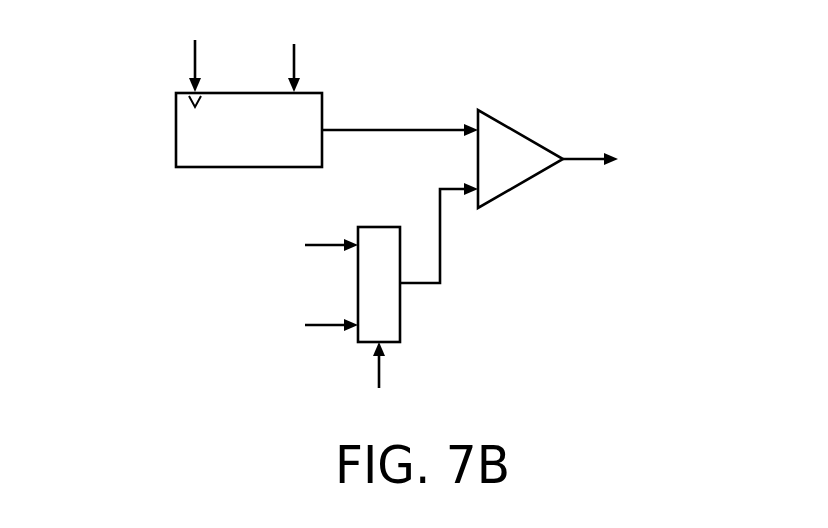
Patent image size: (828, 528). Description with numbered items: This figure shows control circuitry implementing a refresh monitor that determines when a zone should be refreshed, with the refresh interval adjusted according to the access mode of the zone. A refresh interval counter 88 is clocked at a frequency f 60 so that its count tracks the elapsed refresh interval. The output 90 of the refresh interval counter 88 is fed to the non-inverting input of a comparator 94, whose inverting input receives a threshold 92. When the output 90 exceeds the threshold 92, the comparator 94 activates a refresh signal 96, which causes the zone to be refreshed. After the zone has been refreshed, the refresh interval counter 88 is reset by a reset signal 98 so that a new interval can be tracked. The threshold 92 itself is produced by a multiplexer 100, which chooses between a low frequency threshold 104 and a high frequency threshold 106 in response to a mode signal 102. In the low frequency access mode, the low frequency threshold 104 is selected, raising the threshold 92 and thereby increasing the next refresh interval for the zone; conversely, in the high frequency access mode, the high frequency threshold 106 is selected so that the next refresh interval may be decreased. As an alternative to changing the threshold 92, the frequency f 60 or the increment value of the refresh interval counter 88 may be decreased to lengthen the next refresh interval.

The frequency f 60 is at (190, 62).
The refresh interval counter 88 is at (249, 91).
The output of the refresh interval counter 90 is at (390, 128).
The threshold 92 is at (438, 203).
The comparator 94 is at (527, 192).
The refresh signal 96 is at (585, 157).
The reset signal 98 is at (298, 58).
The multiplexer 100 is at (402, 325).
The mode signal 102 is at (382, 372).
The low frequency threshold 104 is at (320, 333).
The high frequency threshold 106 is at (325, 240).